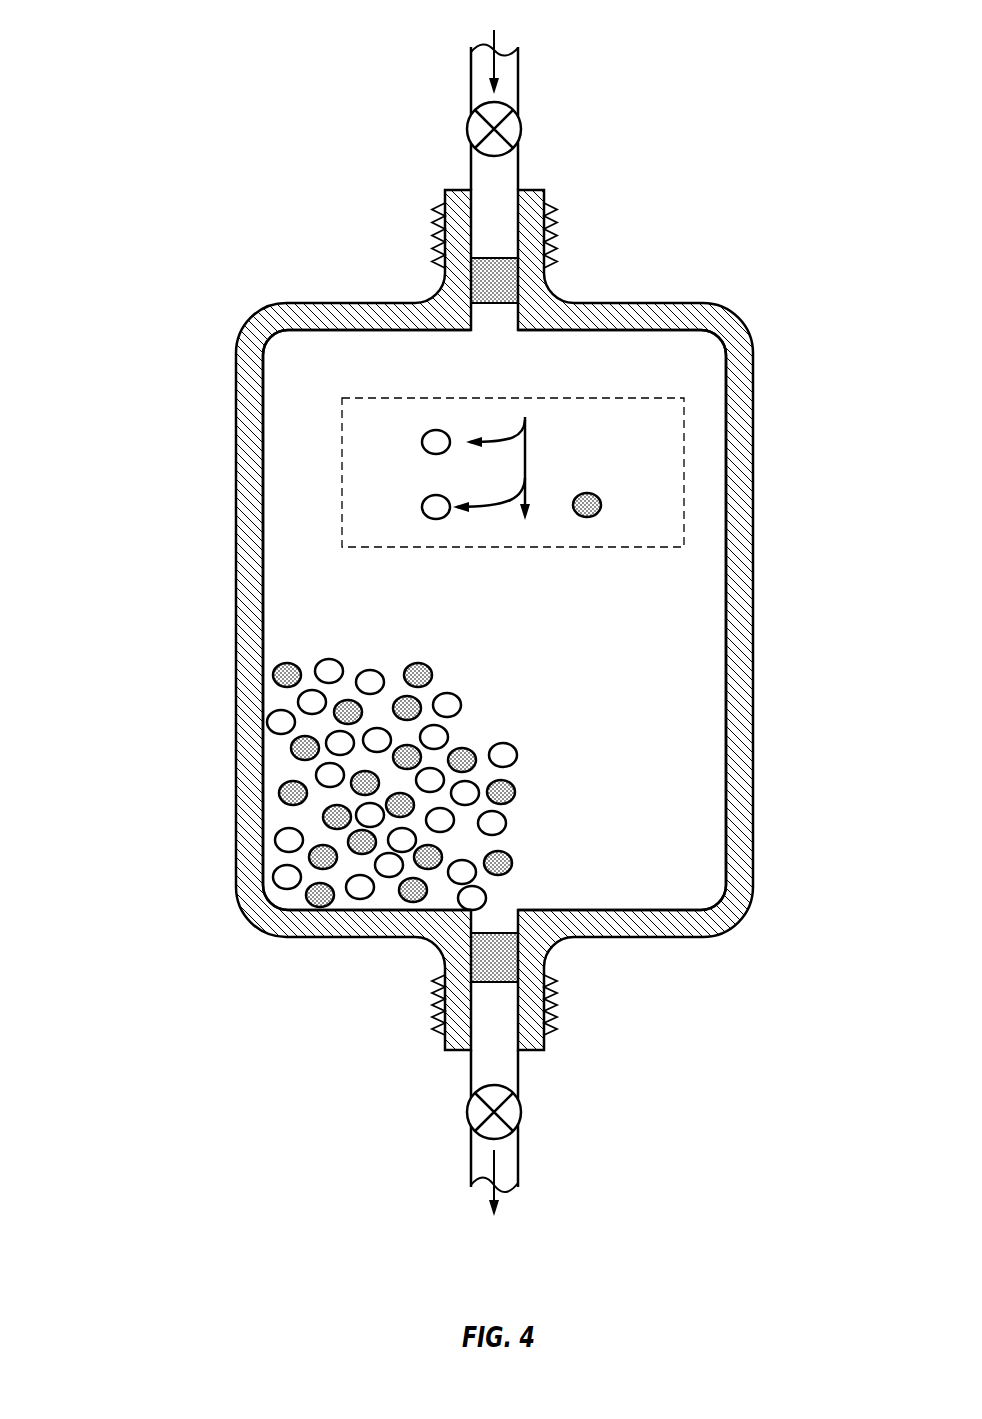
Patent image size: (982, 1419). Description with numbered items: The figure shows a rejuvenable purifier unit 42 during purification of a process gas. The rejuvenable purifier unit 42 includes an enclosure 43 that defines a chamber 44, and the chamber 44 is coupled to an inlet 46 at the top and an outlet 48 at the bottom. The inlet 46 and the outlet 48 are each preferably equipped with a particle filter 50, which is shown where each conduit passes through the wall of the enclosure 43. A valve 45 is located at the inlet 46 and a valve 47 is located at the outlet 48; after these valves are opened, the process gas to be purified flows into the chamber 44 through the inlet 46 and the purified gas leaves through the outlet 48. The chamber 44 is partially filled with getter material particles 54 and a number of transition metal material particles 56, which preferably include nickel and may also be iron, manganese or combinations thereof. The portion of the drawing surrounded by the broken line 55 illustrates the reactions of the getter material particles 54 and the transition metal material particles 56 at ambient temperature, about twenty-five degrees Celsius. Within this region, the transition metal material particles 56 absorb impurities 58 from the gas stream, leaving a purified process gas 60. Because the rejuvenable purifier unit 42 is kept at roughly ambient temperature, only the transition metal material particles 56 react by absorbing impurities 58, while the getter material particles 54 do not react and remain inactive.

The rejuvenable purifier unit 42 is at (217, 152).
The enclosure 43 is at (745, 606).
The chamber 44 is at (708, 333).
The valve 45 is at (521, 128).
The inlet 46 is at (506, 176).
The valve 47 is at (521, 1110).
The outlet 48 is at (500, 1037).
The particle filter 50 is at (458, 293).
The getter material particles 54 is at (602, 503).
The broken line 55 is at (507, 394).
The transition metal material particles 56 is at (422, 443).
The impurities 58 is at (514, 432).
The purified process gas 60 is at (528, 457).